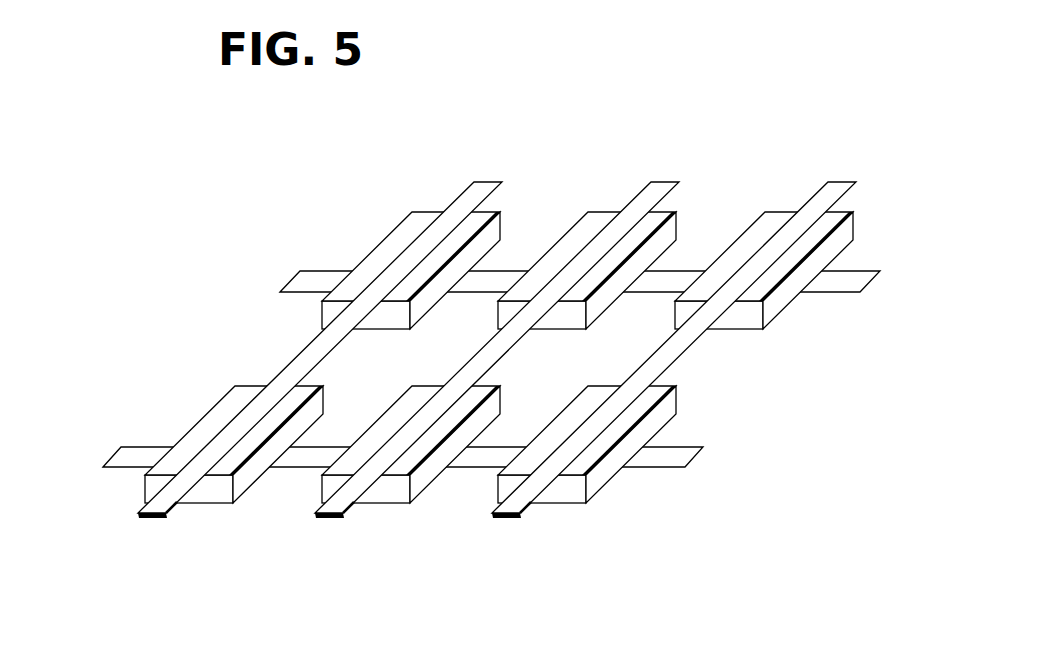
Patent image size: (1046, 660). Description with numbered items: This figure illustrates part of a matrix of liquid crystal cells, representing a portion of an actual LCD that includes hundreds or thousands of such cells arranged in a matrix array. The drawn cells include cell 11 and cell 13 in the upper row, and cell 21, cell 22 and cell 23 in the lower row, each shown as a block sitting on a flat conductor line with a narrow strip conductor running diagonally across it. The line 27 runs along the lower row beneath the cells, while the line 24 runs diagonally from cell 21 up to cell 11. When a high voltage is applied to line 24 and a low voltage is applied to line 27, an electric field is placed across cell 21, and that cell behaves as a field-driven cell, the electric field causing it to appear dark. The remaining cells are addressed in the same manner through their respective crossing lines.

The cell 11 is at (407, 219).
The cell 13 is at (770, 218).
The cell 21 is at (238, 392).
The cell 22 is at (384, 496).
The cell 23 is at (678, 396).
The line 27 is at (138, 447).
The line 24 is at (153, 518).